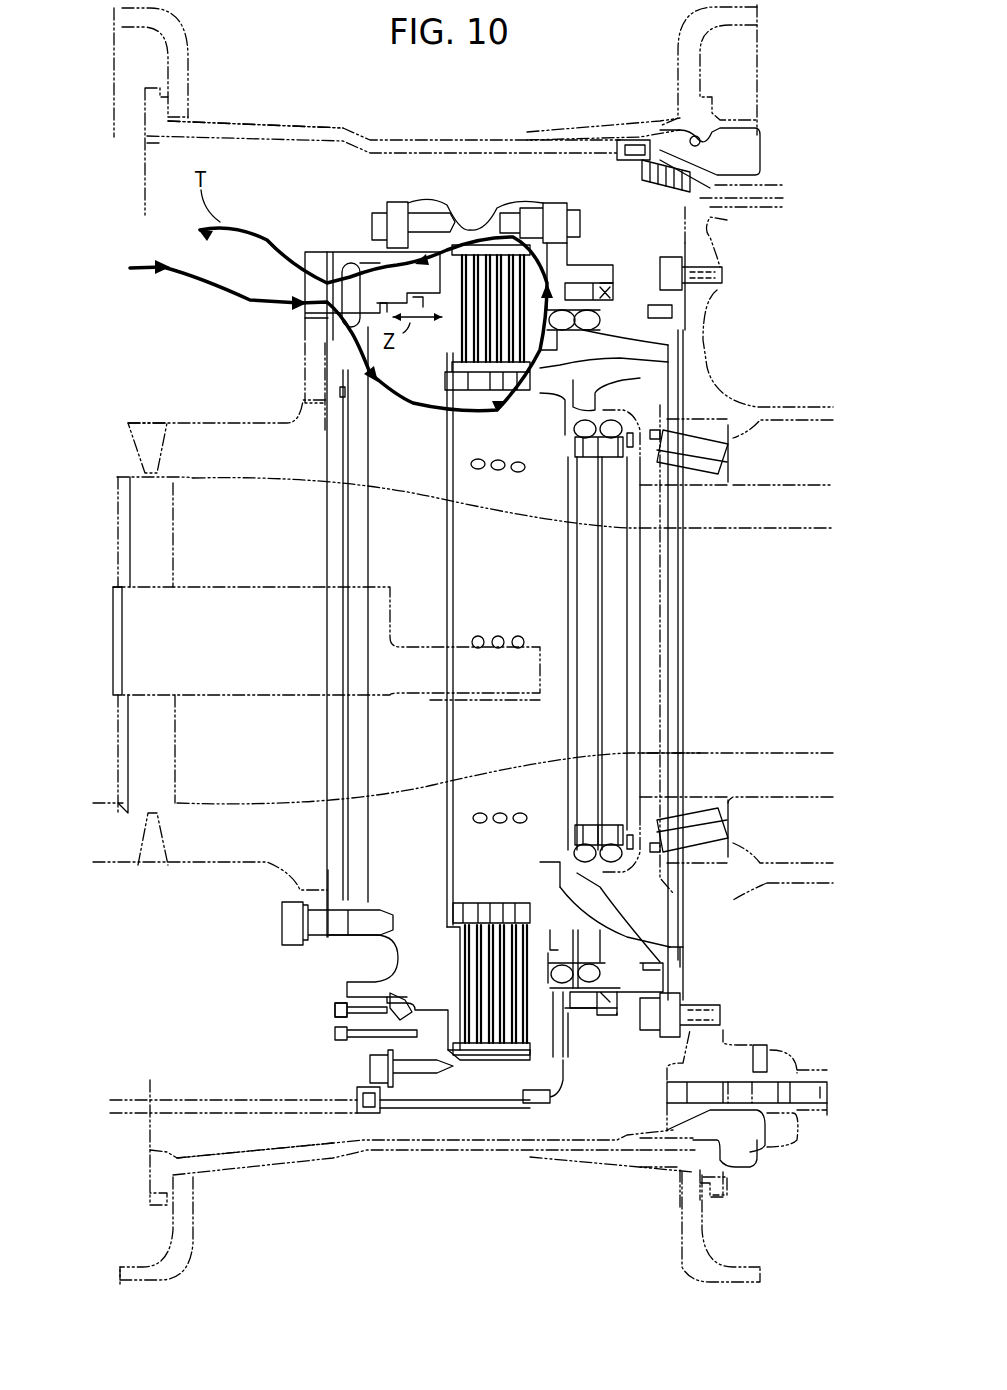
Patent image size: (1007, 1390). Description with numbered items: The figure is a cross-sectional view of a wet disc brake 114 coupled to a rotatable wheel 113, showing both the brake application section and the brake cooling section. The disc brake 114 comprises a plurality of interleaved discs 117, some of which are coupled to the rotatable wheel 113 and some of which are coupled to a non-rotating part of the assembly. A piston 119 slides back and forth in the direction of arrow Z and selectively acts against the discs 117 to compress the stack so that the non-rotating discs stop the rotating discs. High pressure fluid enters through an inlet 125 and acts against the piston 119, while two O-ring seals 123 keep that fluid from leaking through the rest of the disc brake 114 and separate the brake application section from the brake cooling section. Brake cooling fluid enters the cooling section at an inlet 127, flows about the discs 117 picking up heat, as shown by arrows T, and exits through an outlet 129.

The rotatable wheel 113 is at (246, 128).
The disc brake 114 is at (95, 1153).
The interleaved discs 117 is at (477, 290).
The piston 119 is at (430, 325).
The O-ring seals 123 is at (335, 330).
The inlet 125 is at (393, 1010).
The inlet 127 is at (328, 322).
The outlet 129 is at (362, 263).